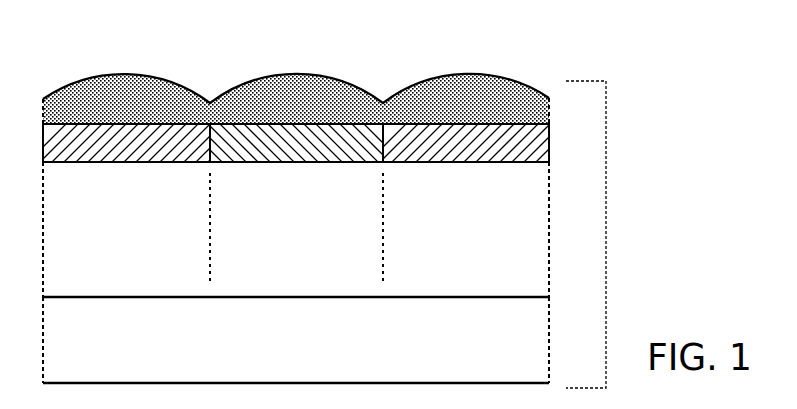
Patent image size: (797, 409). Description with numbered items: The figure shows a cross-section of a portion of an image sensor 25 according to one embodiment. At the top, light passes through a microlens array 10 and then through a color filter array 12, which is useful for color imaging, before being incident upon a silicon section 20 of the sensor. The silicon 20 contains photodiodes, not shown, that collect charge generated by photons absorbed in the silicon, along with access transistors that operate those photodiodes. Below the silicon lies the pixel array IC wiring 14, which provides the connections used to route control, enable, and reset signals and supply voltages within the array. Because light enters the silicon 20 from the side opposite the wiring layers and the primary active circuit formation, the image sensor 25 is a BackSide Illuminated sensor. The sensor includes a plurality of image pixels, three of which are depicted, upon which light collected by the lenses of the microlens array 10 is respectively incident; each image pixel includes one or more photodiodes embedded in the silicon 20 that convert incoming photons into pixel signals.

The microlens array 10 is at (398, 93).
The color filter array 12 is at (527, 145).
The pixel array IC wiring 14 is at (296, 340).
The silicon section 20 is at (296, 229).
The image sensor 25 is at (633, 235).